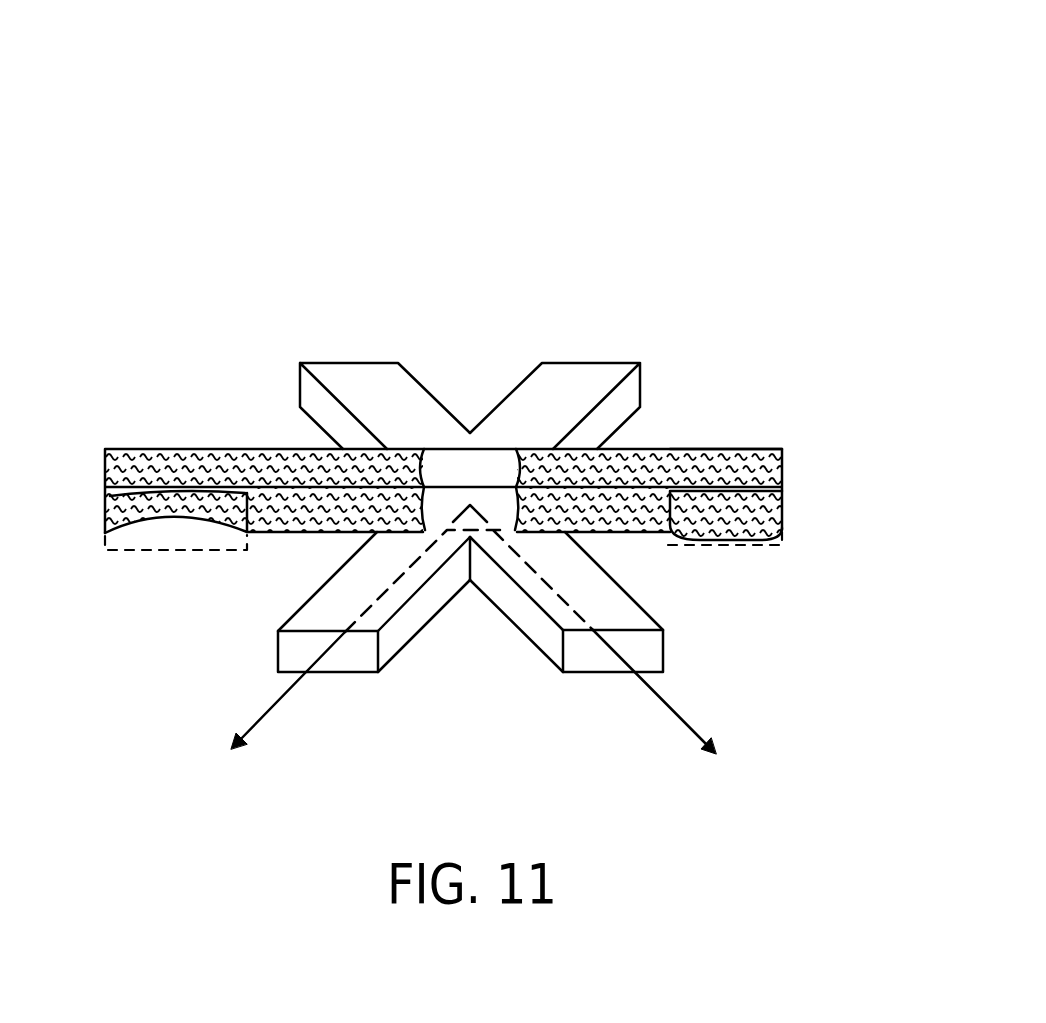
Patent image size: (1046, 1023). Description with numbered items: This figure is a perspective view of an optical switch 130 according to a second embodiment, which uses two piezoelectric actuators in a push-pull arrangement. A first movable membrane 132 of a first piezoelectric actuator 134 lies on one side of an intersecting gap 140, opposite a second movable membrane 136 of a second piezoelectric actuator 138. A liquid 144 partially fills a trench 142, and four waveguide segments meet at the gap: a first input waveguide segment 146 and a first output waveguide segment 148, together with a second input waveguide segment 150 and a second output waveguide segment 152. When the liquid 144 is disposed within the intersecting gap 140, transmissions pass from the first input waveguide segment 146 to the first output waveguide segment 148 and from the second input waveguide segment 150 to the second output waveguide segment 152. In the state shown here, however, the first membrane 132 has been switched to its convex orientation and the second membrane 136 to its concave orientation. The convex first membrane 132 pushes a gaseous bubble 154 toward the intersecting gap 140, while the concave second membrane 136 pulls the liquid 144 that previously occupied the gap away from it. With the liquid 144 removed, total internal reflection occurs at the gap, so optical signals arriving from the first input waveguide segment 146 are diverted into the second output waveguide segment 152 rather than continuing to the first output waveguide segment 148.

The optical switch 130 is at (686, 73).
The first movable membrane 132 is at (167, 522).
The first piezoelectric actuator 134 is at (108, 537).
The second movable membrane 136 is at (750, 542).
The second piezoelectric actuator 138 is at (780, 542).
The intersecting gap 140 is at (443, 503).
The trench 142 is at (105, 470).
The liquid 144 is at (675, 478).
The first input waveguide segment 146 is at (290, 660).
The first output waveguide segment 148 is at (625, 395).
The second input waveguide segment 150 is at (312, 390).
The second output waveguide segment 152 is at (652, 658).
The gaseous bubble 154 is at (513, 498).